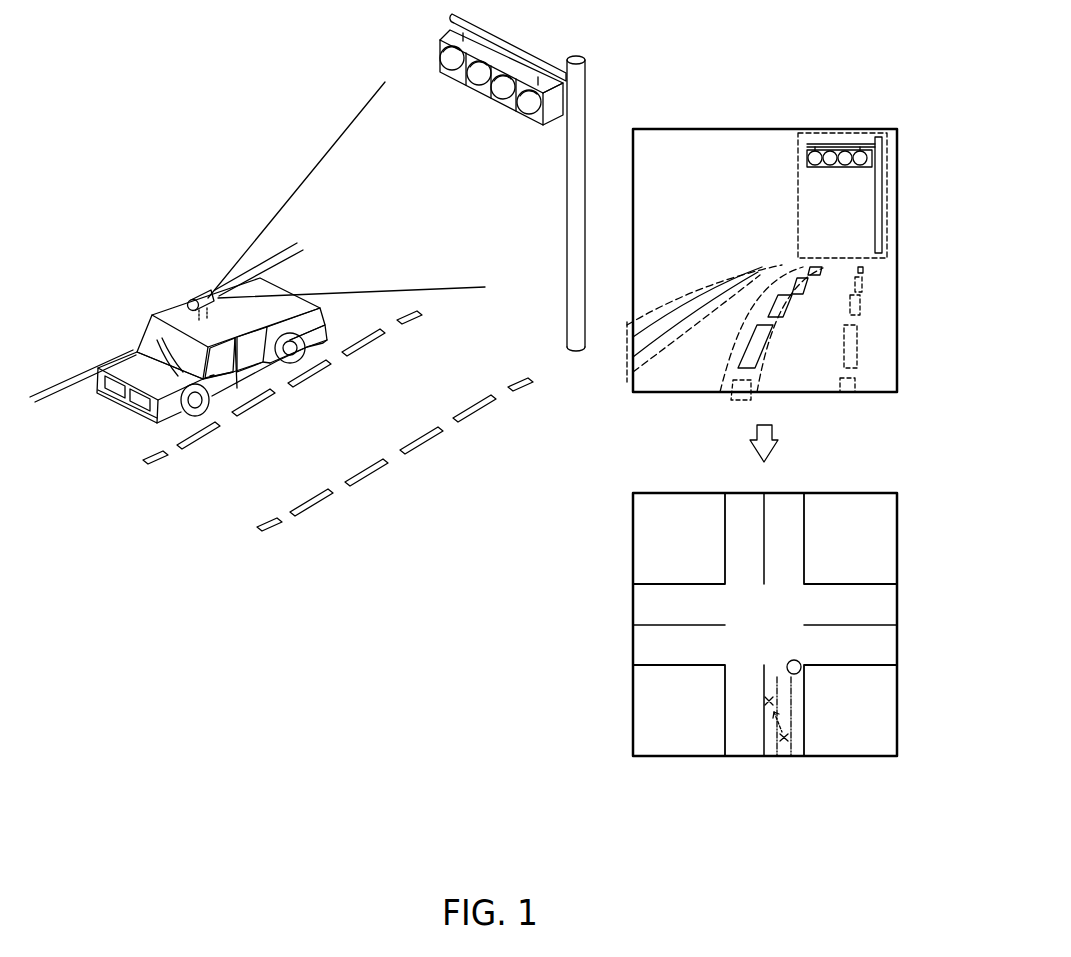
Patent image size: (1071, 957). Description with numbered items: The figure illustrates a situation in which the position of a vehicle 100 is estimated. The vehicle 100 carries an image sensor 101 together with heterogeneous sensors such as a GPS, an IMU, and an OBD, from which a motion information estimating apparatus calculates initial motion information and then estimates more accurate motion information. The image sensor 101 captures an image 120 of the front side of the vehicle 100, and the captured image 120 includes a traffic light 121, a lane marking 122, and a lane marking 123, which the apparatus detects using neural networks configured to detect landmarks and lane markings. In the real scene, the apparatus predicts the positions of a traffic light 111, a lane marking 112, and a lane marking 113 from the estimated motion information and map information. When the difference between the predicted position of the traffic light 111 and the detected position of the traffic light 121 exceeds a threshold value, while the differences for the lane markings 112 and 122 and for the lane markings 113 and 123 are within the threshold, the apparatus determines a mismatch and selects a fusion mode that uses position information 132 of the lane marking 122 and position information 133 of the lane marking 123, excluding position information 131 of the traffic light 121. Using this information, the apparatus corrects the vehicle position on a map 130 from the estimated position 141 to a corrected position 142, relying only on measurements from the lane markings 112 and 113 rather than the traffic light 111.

The vehicle 100 is at (152, 315).
The image sensor 101 is at (198, 290).
The traffic light 111 is at (577, 55).
The lane marking 112 is at (77, 375).
The lane marking 113 is at (190, 447).
The image 120 is at (837, 128).
The traffic light 121 is at (798, 195).
The lane marking 122 is at (692, 292).
The lane marking 123 is at (727, 395).
The map 130 is at (837, 492).
The position information of the traffic light 131 is at (802, 663).
The position information of the lane marking 132 is at (762, 736).
The position information of the lane marking 133 is at (791, 698).
The position 141 is at (783, 743).
The position 142 is at (766, 701).